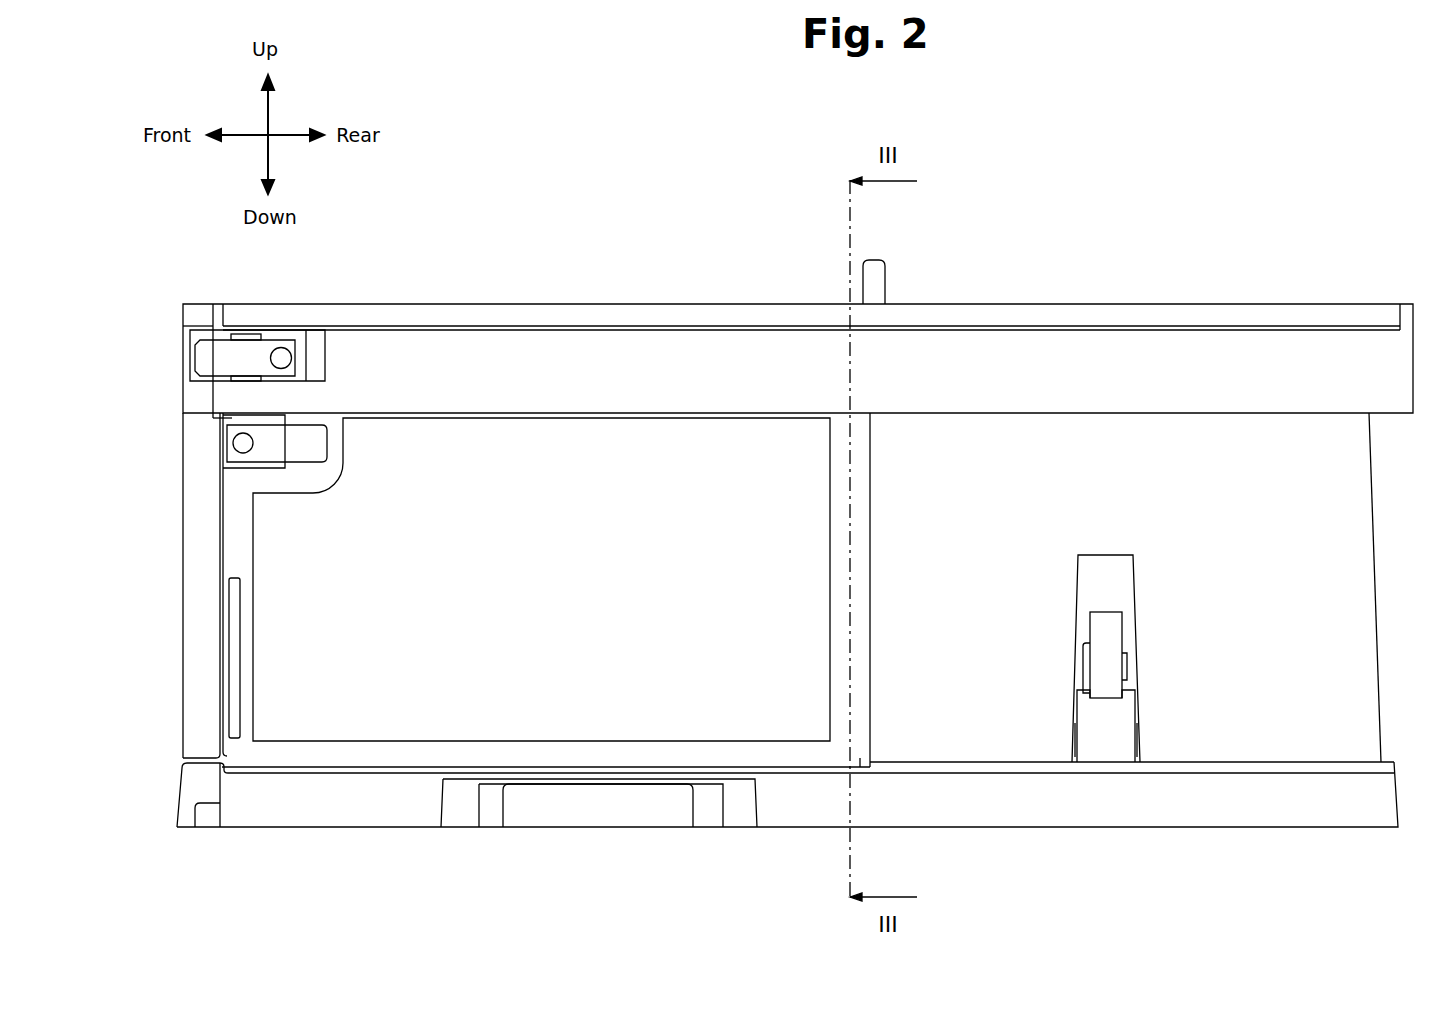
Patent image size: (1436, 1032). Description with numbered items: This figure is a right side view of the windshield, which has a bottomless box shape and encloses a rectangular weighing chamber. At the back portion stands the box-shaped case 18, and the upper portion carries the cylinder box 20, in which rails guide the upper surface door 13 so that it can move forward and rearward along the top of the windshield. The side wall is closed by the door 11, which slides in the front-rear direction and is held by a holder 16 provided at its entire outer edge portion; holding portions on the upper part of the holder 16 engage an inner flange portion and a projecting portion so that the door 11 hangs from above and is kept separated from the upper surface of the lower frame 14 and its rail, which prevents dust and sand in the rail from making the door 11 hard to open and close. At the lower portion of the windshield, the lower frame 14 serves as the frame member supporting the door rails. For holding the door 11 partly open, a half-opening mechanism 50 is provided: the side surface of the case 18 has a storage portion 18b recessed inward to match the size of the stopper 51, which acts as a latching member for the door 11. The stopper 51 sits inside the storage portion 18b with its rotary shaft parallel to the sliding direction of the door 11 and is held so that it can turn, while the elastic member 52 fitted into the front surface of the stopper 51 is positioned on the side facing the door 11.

The door 11 is at (320, 545).
The upper surface door 13 is at (876, 278).
The lower frame 14 is at (1223, 808).
The holder 16 is at (862, 679).
The case 18 is at (1330, 571).
The storage portion 18b is at (1130, 582).
The cylinder box 20 is at (1300, 337).
The half-opening mechanism 50 is at (1152, 655).
The stopper 51 is at (1113, 750).
The elastic member 52 is at (1085, 667).